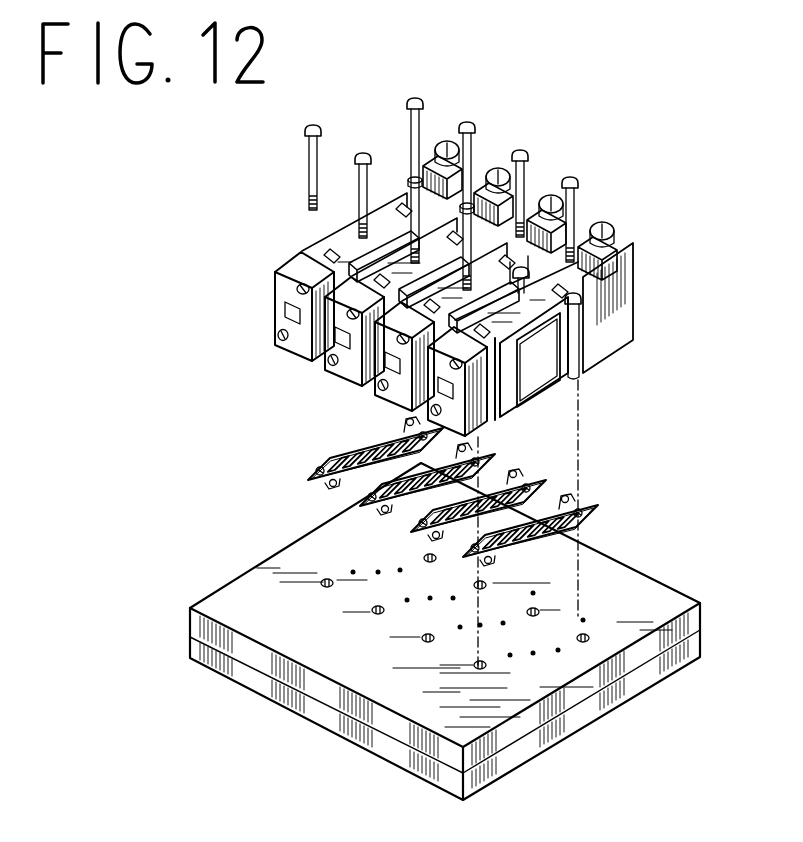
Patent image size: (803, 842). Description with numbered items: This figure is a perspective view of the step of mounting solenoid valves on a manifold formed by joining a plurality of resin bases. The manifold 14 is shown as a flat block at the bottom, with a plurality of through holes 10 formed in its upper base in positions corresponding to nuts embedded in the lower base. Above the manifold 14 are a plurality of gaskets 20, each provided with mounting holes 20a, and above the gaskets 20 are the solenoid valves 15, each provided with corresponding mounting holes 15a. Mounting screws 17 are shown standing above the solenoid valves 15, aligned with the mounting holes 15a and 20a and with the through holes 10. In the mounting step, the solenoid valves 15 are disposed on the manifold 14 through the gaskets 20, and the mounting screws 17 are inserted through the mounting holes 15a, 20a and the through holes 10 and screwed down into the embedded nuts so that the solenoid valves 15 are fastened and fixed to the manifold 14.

The through holes 10 is at (592, 638).
The manifold 14 is at (331, 746).
The solenoid valves 15 is at (481, 172).
The mounting holes 15a is at (513, 185).
The mounting screws 17 is at (466, 122).
The gaskets 20 is at (355, 510).
The mounting holes 20a is at (494, 462).